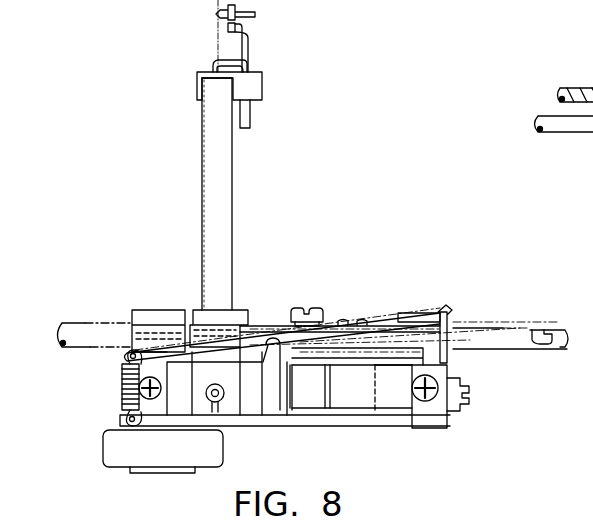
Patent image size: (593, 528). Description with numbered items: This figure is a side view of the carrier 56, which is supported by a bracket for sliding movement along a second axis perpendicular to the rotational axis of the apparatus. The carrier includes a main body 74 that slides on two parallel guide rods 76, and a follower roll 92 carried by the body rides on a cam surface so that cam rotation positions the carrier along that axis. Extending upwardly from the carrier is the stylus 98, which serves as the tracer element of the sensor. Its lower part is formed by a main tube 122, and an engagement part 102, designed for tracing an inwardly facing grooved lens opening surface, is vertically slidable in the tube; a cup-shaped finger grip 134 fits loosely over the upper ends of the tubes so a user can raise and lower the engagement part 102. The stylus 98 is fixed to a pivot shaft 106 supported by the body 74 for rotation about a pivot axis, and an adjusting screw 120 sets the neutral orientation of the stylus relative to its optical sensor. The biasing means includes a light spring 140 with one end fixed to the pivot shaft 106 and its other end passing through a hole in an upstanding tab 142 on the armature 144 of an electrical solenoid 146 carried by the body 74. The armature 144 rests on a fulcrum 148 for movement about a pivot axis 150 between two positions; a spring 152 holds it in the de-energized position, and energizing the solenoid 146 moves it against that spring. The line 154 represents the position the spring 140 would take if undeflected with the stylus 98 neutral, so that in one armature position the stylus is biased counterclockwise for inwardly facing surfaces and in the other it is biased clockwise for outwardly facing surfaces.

The carrier 56 is at (470, 399).
The main body 74 is at (427, 408).
The guide rods 76 is at (88, 322).
The follower roll 92 is at (105, 446).
The stylus 98 is at (233, 217).
The engagement part 102 is at (249, 55).
The pivot shaft 106 is at (221, 404).
The adjusting screw 120 is at (300, 307).
The main tube 122 is at (202, 197).
The finger grip 134 is at (262, 89).
The light spring 140 is at (450, 347).
The upstanding tab 142 is at (444, 310).
The armature 144 is at (450, 352).
The electrical solenoid 146 is at (376, 388).
The fulcrum 148 is at (290, 383).
The pivot axis 150 is at (268, 365).
The spring 152 is at (122, 385).
The line 154 is at (547, 332).